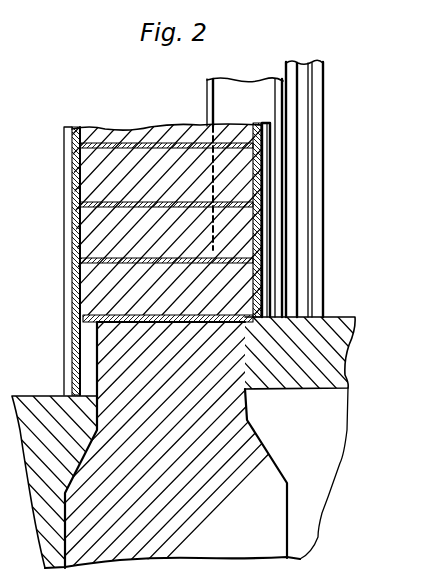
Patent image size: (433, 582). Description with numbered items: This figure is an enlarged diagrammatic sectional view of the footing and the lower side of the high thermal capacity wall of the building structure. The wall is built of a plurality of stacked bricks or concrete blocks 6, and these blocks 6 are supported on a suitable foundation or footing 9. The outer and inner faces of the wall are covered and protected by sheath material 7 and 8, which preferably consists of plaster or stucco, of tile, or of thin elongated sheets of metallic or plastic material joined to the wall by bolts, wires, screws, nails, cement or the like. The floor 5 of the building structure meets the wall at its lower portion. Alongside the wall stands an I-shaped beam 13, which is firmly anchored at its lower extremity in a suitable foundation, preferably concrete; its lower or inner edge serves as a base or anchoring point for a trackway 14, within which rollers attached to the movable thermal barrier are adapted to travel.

The floor 5 is at (326, 330).
The concrete blocks 6 is at (130, 133).
The outer sheath material 7 is at (65, 191).
The inner sheath material 8 is at (265, 153).
The footing 9 is at (231, 433).
The I-shaped beam 13 is at (227, 95).
The trackway 14 is at (316, 97).